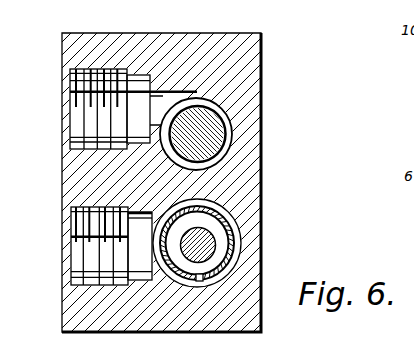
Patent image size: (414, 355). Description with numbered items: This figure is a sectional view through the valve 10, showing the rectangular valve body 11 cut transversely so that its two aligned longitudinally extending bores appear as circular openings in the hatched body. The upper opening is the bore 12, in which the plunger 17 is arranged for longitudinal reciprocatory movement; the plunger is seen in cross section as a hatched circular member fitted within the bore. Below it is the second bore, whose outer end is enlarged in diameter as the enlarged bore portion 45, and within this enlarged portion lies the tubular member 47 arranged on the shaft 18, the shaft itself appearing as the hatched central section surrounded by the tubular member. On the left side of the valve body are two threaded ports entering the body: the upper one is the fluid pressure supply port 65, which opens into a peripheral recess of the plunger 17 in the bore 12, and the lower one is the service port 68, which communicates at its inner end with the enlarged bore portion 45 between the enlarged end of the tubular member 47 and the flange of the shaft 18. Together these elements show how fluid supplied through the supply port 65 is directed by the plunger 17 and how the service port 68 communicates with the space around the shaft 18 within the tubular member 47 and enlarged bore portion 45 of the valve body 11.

The valve 10 is at (264, 53).
The valve body 11 is at (180, 53).
The bore 12 is at (220, 157).
The plunger 17 is at (221, 123).
The shaft 18 is at (214, 249).
The enlarged bore portion 45 is at (216, 207).
The tubular member 47 is at (228, 278).
The fluid pressure supply port 65 is at (75, 117).
The service port 68 is at (80, 259).